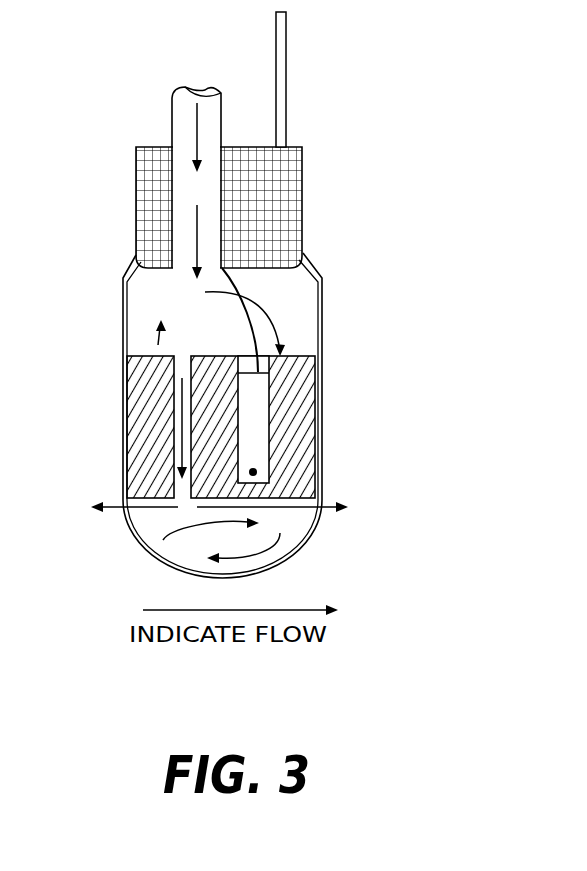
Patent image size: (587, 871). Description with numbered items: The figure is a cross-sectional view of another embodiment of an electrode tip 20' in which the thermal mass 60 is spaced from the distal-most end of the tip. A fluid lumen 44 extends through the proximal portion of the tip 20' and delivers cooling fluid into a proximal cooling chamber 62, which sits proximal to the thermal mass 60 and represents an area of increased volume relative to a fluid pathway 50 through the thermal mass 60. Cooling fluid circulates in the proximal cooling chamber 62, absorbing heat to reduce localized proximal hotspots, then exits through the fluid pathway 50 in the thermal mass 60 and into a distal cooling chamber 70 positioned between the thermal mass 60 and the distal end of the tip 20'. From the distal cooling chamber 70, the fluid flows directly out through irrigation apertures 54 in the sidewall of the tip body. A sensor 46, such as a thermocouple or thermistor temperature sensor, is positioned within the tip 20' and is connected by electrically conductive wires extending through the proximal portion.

The tip 20' is at (314, 295).
The fluid lumen 44 is at (172, 125).
The sensor 46 is at (263, 408).
The fluid pathway 50 is at (182, 425).
The irrigation apertures 54 is at (322, 500).
The thermal mass 60 is at (295, 462).
The proximal cooling chamber 62 is at (203, 328).
The distal cooling chamber 70 is at (135, 542).